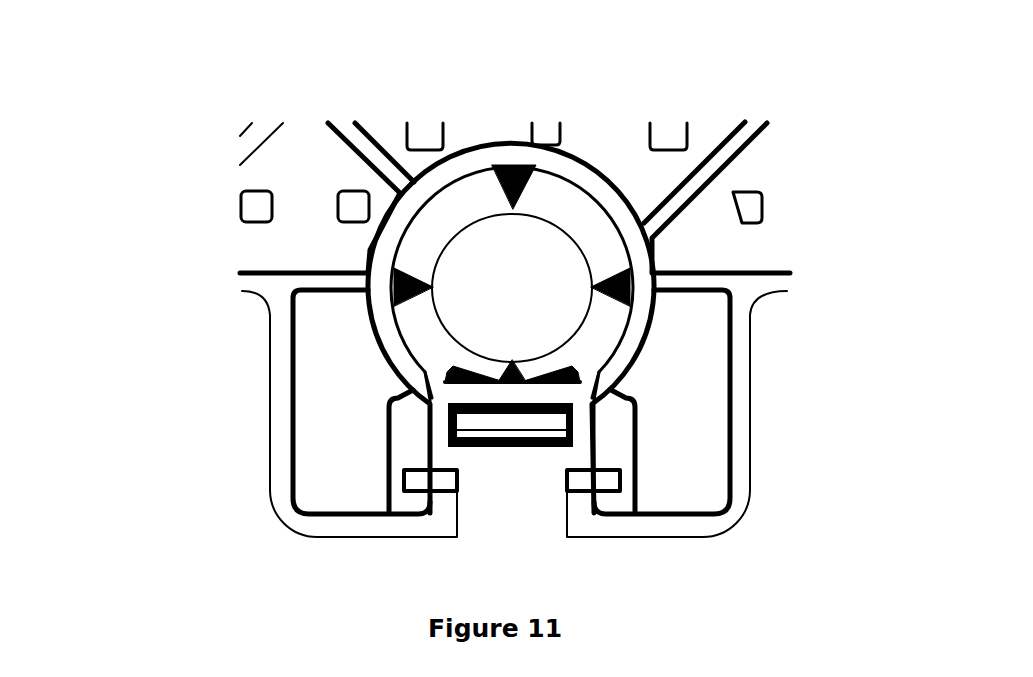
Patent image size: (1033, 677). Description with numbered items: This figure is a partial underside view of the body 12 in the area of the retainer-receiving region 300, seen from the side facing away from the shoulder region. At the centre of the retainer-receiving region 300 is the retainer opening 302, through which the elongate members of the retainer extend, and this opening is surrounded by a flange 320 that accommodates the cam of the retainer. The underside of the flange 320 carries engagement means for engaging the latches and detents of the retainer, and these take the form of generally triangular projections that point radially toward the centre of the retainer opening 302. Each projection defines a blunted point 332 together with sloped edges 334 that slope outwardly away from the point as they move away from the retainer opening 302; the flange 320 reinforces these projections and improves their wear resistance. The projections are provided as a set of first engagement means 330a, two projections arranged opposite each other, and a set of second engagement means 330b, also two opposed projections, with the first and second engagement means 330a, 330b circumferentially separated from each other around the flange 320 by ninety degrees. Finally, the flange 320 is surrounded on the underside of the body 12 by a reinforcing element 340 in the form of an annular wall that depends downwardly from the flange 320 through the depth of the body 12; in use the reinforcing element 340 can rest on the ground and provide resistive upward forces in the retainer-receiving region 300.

The body 12 is at (270, 487).
The retainer-receiving region 300 is at (400, 355).
The retainer opening 302 is at (473, 259).
The flange 320 is at (568, 205).
The first engagement means 330a is at (405, 286).
The second engagement means 330b is at (515, 178).
The blunted point 332 is at (428, 291).
The sloped edges 334 is at (513, 206).
The reinforcing element 340 is at (382, 317).